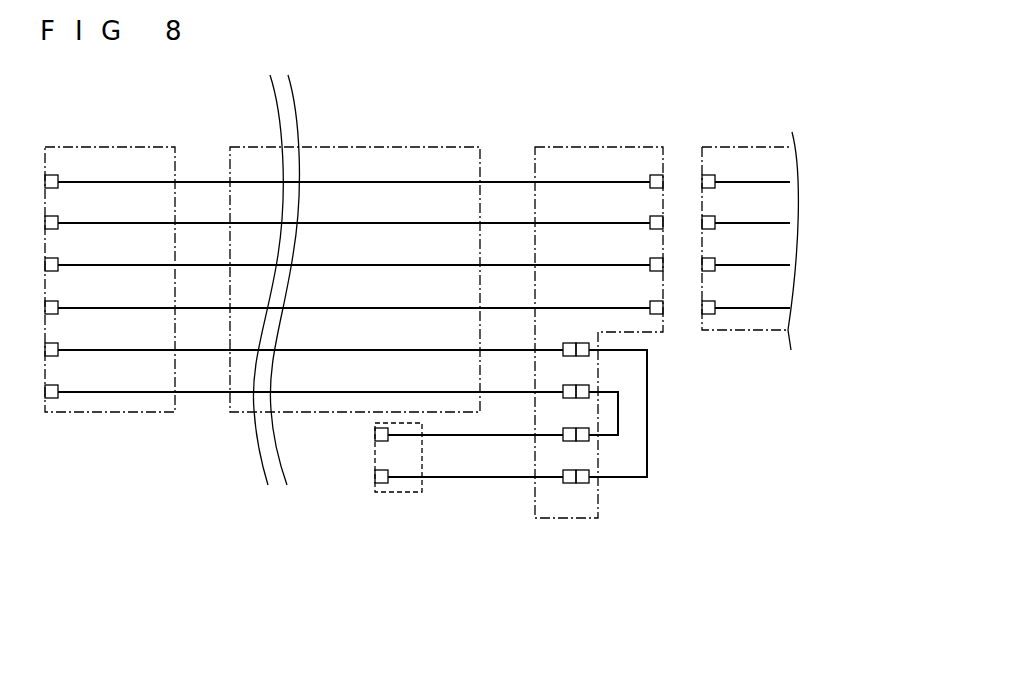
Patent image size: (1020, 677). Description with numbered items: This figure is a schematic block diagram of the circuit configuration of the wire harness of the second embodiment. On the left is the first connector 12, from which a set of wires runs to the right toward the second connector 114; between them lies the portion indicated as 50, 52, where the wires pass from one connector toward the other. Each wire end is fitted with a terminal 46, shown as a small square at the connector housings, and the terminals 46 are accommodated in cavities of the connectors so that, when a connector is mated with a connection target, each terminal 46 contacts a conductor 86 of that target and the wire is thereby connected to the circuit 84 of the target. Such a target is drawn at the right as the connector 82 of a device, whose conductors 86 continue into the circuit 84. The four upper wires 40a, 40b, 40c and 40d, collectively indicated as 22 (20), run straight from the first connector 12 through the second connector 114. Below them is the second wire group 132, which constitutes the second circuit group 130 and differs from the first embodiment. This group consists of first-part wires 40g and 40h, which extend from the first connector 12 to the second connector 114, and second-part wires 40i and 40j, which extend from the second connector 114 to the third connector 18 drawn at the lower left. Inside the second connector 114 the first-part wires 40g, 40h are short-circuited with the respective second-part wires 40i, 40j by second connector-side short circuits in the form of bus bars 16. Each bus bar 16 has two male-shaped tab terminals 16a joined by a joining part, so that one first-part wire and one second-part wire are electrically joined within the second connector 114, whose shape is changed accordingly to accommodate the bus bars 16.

The first connector 12 is at (88, 412).
The bus bar 16 is at (639, 416).
The tab terminal 16a is at (585, 468).
The third connector 18 is at (383, 495).
The wire harness 20 is at (354, 175).
The wire bundle 22 is at (354, 175).
The wire 40a is at (330, 182).
The wire 40b is at (343, 223).
The wire 40c is at (367, 265).
The wire 40d is at (395, 308).
The first-part wire 40g is at (453, 350).
The first-part wire 40h is at (467, 392).
The second-part wire 40i is at (377, 585).
The second-part wire 40j is at (502, 437).
The terminal 46 is at (56, 218).
The routing member 50 is at (230, 412).
The routing member 52 is at (284, 280).
The connector 82 is at (770, 147).
The circuit 84 is at (749, 308).
The conductor 86 is at (709, 218).
The second connector 114 is at (576, 147).
The second circuit group 130 is at (318, 491).
The second wire group 132 is at (318, 491).